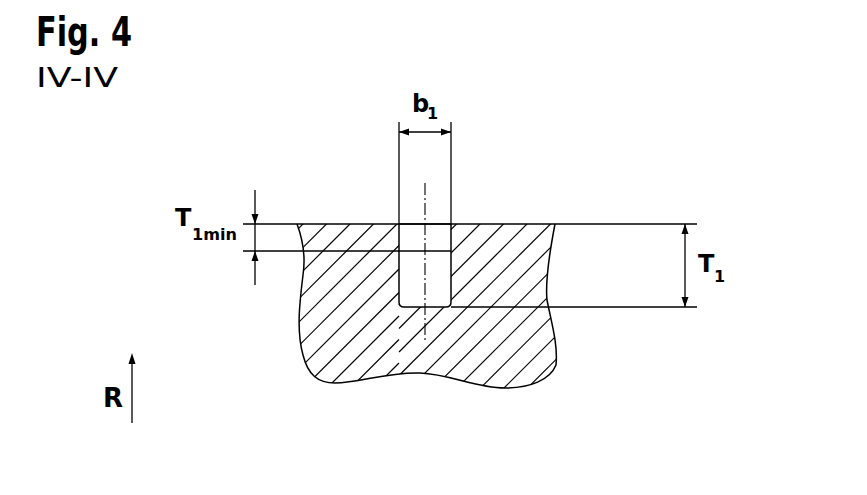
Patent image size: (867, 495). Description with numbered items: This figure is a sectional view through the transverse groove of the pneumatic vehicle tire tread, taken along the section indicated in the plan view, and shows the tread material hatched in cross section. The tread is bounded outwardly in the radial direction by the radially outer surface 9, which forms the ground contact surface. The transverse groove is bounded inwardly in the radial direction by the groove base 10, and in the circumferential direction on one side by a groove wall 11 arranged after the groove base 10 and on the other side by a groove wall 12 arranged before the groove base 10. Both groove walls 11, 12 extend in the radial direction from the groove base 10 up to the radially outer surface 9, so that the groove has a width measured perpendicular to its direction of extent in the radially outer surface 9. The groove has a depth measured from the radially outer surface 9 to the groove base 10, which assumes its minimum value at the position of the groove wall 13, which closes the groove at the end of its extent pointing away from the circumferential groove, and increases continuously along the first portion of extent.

The radially outer surface 9 is at (524, 225).
The groove base 10 is at (417, 305).
The groove wall 11 is at (399, 283).
The groove wall 12 is at (451, 277).
The groove wall 13 is at (438, 233).